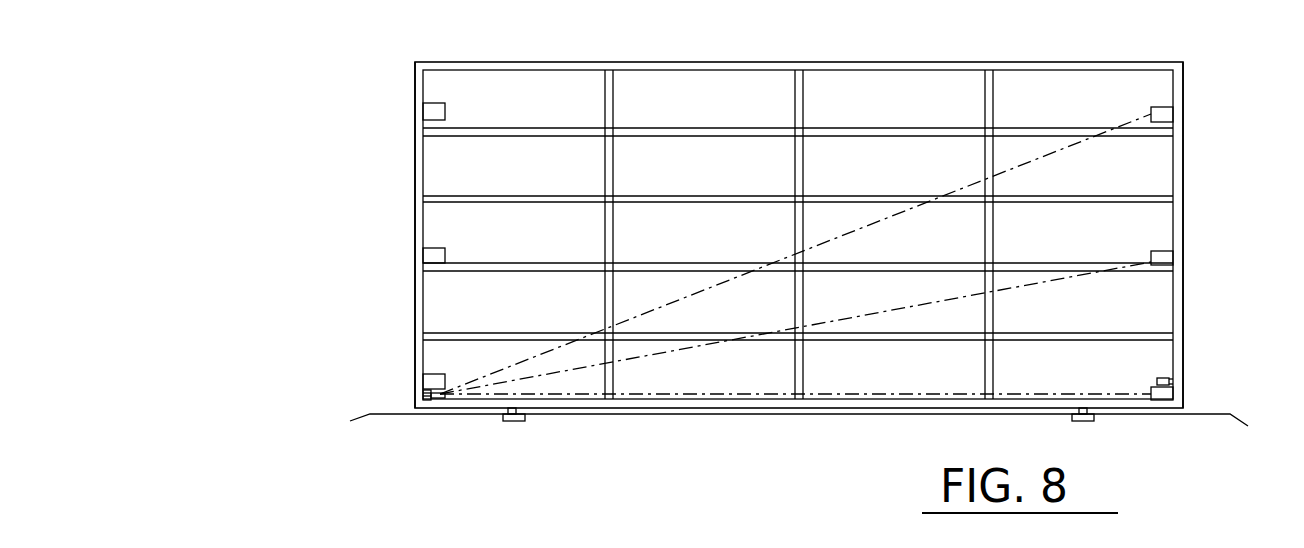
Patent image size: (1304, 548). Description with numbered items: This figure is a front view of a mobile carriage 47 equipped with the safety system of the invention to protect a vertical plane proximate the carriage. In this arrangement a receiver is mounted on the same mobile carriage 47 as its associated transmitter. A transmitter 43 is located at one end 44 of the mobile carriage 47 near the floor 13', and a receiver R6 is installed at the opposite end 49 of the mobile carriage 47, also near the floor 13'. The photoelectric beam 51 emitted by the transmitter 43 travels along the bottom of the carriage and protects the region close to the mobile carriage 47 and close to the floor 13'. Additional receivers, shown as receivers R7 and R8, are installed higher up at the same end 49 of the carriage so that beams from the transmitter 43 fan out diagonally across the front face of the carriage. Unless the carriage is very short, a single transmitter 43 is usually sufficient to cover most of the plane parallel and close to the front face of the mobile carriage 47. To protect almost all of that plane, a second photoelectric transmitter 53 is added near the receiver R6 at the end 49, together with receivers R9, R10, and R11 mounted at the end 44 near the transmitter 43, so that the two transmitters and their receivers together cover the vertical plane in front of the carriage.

The floor 13' is at (764, 398).
The transmitter 43 is at (440, 397).
The end of mobile carriage 44 is at (415, 268).
The mobile carriage 47 is at (1069, 42).
The opposite end of mobile carriage 49 is at (1183, 318).
The photoelectric beam 51 is at (718, 394).
The second photoelectric transmitter 53 is at (1160, 380).
The receiver R6 is at (1165, 392).
The receiver R7 is at (1158, 265).
The receiver R8 is at (1163, 115).
The receiver R9 is at (433, 111).
The receiver R10 is at (435, 252).
The receiver R11 is at (435, 382).